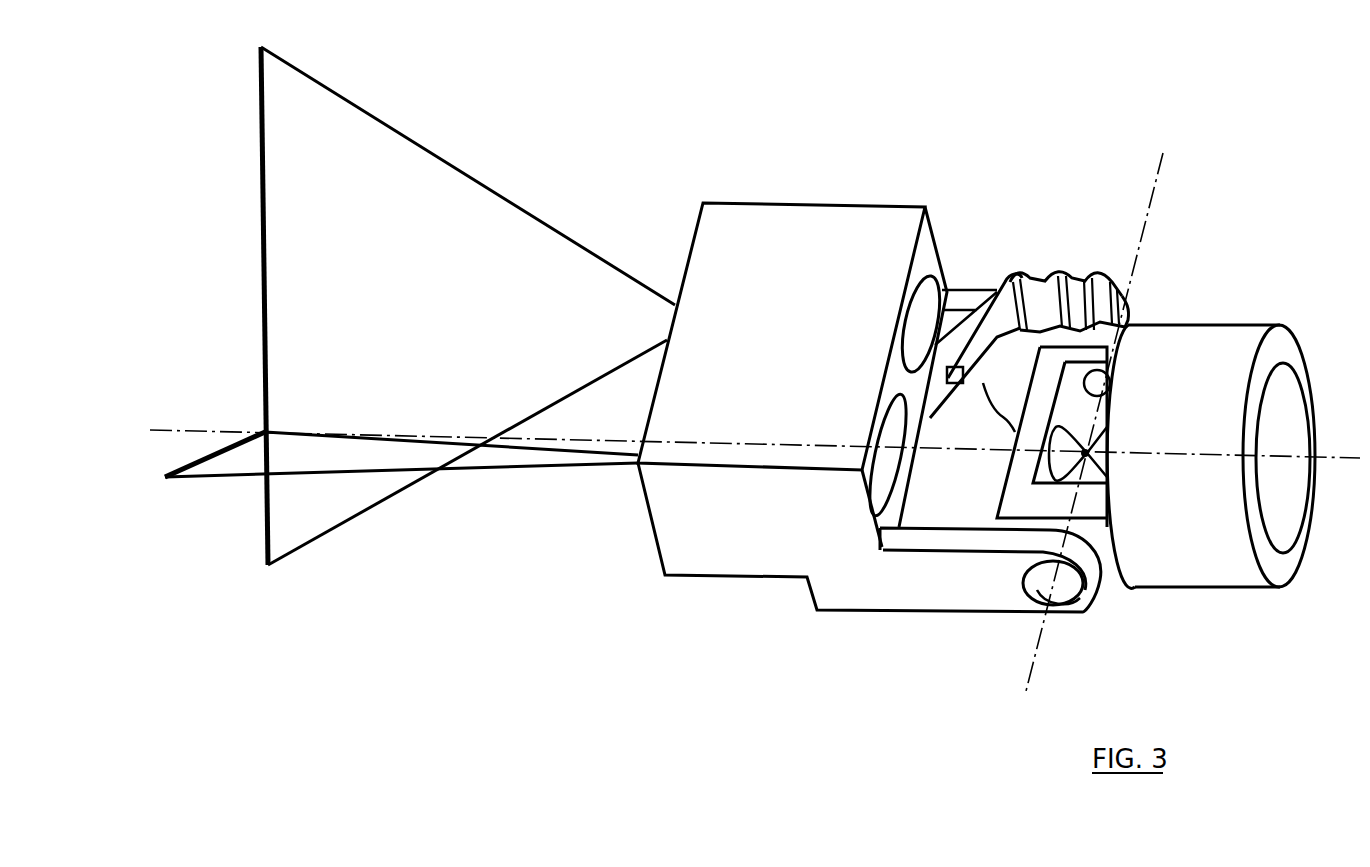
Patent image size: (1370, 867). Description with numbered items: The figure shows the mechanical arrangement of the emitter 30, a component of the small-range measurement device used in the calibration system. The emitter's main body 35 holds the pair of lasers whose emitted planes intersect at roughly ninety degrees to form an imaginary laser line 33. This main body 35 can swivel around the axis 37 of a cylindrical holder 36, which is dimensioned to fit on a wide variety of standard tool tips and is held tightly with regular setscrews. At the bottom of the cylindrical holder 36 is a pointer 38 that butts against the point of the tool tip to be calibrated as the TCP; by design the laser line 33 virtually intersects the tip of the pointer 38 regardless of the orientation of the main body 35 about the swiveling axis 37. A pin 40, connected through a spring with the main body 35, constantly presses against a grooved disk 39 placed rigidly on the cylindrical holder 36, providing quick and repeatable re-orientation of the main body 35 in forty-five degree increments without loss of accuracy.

The emitter 30 is at (697, 717).
The laser line 33 is at (407, 435).
The emitter's main body 35 is at (828, 273).
The cylindrical holder 36 is at (1203, 350).
The axis 37 is at (1127, 297).
The pointer 38 is at (1085, 453).
The grooved disk 39 is at (1043, 290).
The pin 40 is at (998, 287).